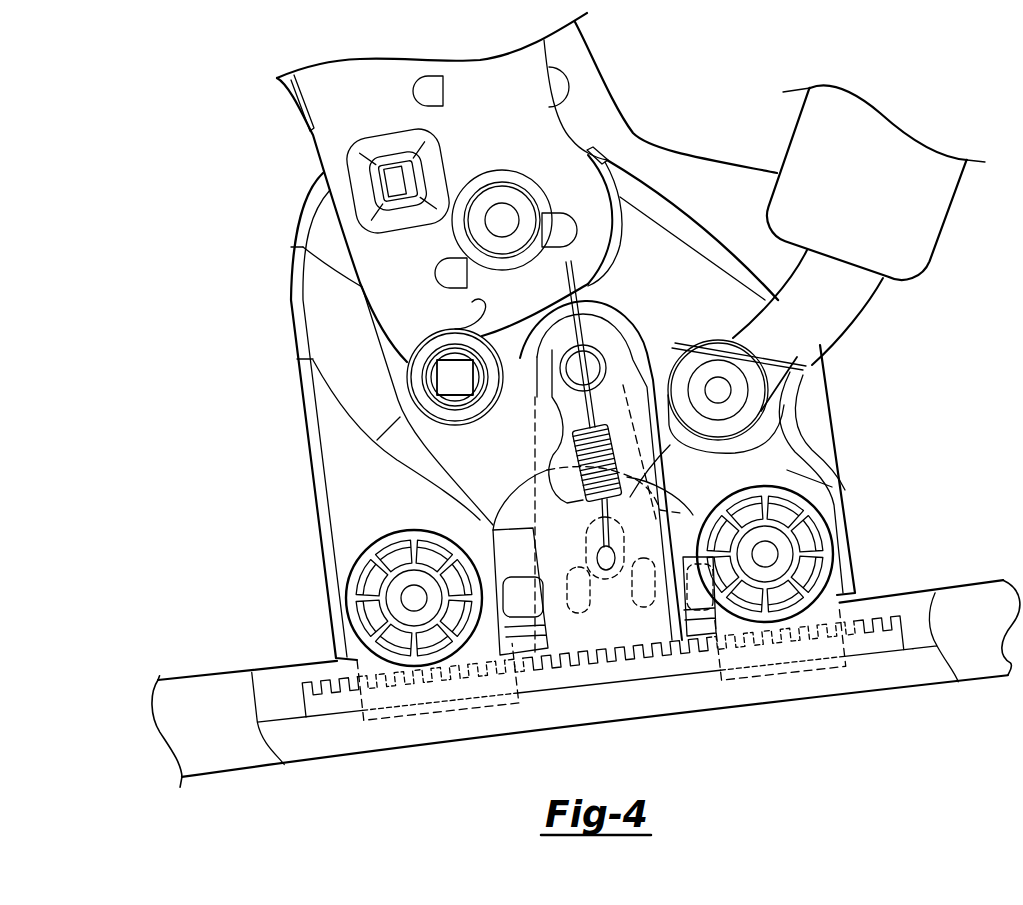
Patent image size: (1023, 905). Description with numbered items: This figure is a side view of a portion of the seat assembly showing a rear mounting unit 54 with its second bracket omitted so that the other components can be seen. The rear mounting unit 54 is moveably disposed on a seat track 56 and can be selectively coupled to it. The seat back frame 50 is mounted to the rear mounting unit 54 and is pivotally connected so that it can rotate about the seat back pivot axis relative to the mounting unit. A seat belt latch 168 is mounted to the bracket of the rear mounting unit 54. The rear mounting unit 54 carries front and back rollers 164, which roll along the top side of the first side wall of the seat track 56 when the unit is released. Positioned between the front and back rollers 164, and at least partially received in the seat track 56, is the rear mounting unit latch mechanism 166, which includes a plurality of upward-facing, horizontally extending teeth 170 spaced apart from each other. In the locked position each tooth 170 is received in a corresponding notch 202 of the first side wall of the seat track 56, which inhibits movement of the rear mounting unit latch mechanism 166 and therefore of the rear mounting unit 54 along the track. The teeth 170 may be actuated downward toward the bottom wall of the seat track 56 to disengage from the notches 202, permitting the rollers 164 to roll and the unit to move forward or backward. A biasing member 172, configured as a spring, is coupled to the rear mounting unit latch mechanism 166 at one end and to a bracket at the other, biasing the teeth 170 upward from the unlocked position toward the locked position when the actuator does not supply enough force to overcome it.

The seat back frame 50 is at (317, 145).
The rear mounting unit 54 is at (290, 280).
The seat track 56 is at (586, 691).
The rollers 164 is at (405, 530).
The rear mounting unit latch mechanism 166 is at (607, 666).
The seat belt latch 168 is at (883, 279).
The teeth 170 is at (615, 655).
The biasing member 172 is at (577, 462).
The notches 202 is at (347, 695).